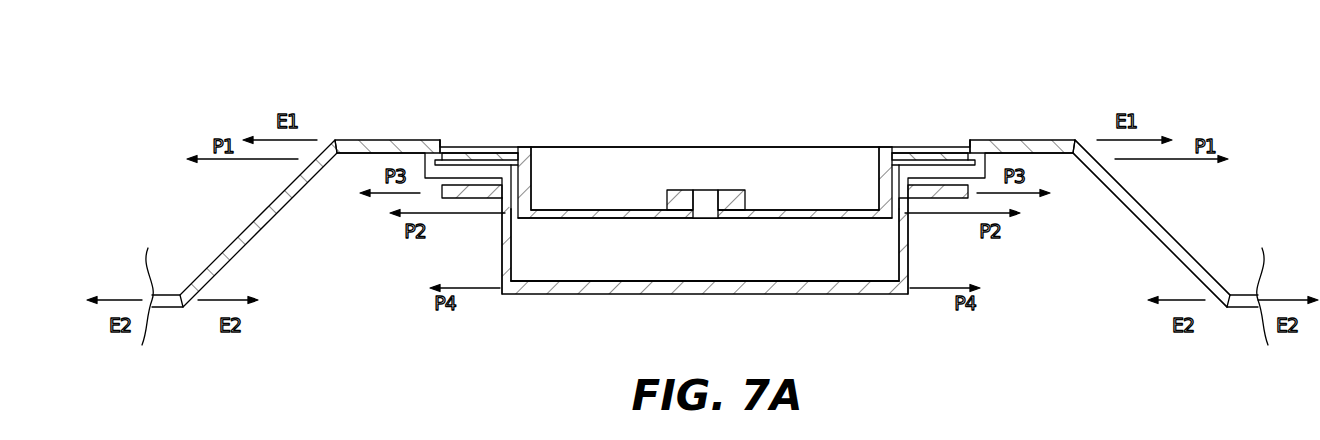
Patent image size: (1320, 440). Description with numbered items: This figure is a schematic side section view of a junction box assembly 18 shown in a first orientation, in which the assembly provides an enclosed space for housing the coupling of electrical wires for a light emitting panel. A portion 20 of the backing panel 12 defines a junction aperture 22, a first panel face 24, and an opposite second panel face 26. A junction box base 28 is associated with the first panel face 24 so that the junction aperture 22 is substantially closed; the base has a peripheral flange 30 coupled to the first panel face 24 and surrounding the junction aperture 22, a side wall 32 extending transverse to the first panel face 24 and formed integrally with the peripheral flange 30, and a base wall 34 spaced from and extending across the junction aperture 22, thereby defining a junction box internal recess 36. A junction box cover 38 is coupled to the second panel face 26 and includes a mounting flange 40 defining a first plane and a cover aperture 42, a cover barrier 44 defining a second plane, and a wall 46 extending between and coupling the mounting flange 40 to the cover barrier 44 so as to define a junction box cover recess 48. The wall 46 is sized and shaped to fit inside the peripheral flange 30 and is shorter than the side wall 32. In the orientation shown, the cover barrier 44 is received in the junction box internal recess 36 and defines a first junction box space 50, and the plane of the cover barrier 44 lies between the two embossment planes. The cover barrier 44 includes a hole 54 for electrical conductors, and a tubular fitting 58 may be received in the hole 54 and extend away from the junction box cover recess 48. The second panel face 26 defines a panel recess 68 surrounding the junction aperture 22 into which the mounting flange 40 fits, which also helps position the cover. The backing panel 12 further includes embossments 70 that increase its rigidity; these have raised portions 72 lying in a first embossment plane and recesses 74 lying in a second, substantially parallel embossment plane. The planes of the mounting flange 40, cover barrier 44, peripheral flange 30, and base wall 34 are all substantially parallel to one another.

The backing panel 12 is at (1163, 225).
The junction box assembly 18 is at (991, 76).
The portion of the backing panel 20 is at (455, 146).
The junction aperture 22 is at (525, 148).
The first panel face 24 is at (1120, 198).
The second panel face 26 is at (1030, 138).
The junction box base 28 is at (540, 308).
The peripheral flange 30 is at (438, 150).
The side wall 32 is at (512, 258).
The base wall 34 is at (603, 280).
The junction box internal recess 36 is at (762, 270).
The junction box cover 38 is at (866, 139).
The mounting flange 40 is at (513, 150).
The cover aperture 42 is at (641, 139).
The cover barrier 44 is at (758, 208).
The wall 46 is at (532, 157).
The junction box cover recess 48 is at (698, 147).
The first junction box space 50 is at (687, 256).
The hole 54 is at (730, 190).
The tubular fitting 58 is at (688, 190).
The panel recess 68 is at (465, 150).
The embossments 70 is at (1158, 200).
The raised portions 72 is at (360, 140).
The recesses 74 is at (160, 292).